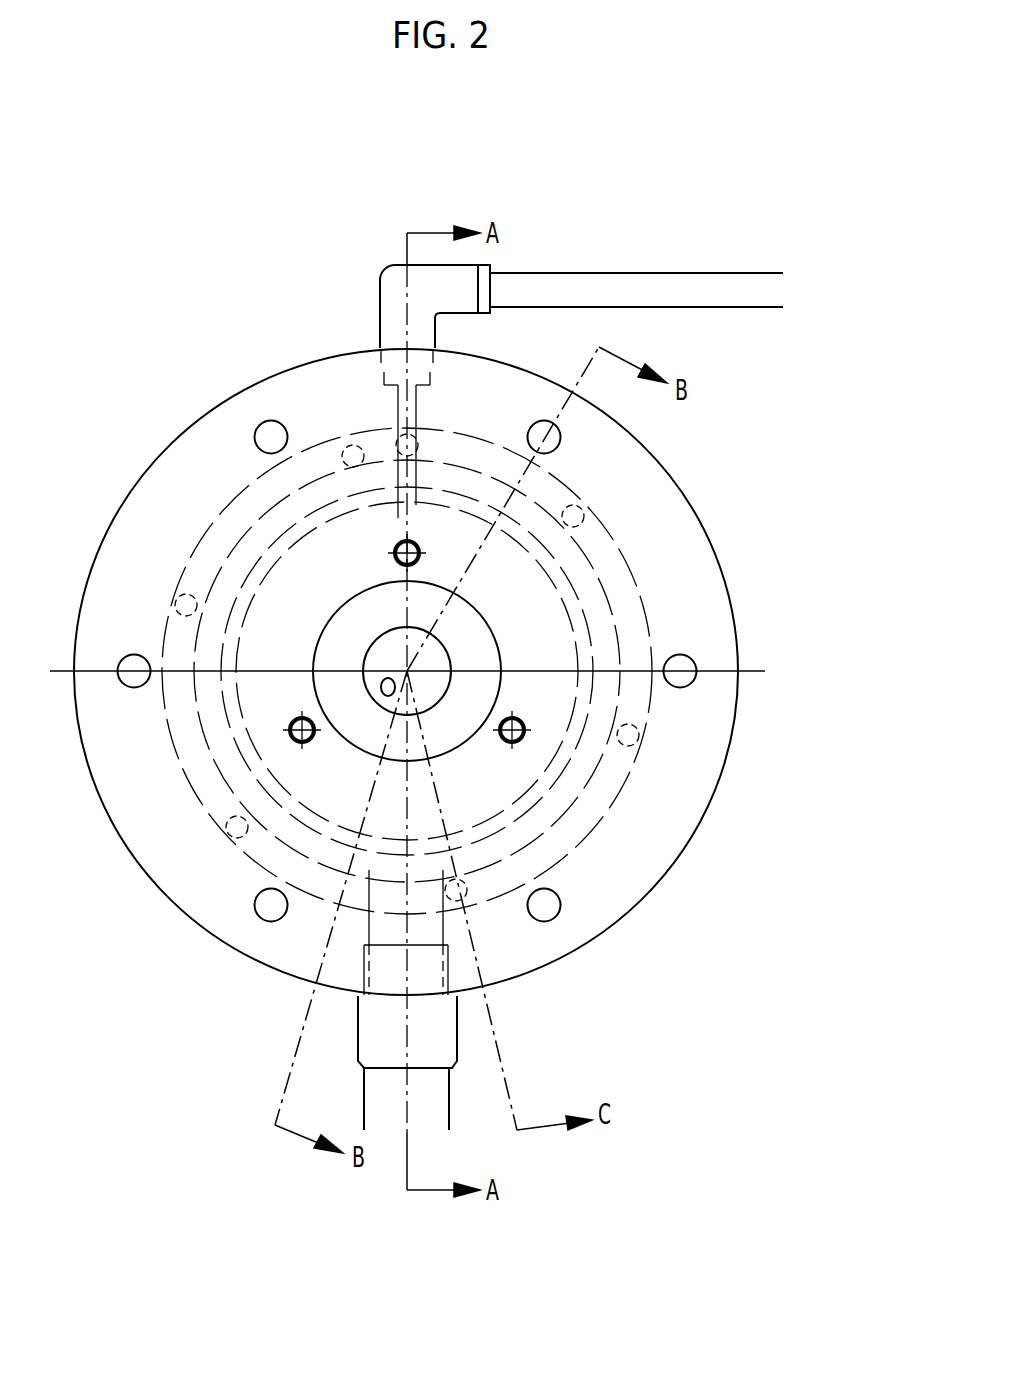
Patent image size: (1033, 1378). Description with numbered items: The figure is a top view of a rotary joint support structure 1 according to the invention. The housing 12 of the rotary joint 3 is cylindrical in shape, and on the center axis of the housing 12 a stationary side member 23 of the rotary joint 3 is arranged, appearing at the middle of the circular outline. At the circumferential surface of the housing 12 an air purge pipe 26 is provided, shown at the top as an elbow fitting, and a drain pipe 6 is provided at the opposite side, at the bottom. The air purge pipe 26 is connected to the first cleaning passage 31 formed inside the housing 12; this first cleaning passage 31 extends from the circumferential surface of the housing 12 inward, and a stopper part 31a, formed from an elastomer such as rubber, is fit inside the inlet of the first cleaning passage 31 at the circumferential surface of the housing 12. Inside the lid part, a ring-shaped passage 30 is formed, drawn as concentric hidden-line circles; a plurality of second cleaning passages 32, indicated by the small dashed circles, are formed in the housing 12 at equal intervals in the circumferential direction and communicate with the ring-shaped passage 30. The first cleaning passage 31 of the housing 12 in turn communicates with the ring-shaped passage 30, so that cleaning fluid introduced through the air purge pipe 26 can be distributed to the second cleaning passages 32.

The rotary table device 1 is at (745, 163).
The rotary joint 3 is at (510, 590).
The drain pipe 6 is at (433, 1095).
The housing 12 is at (175, 488).
The stationary side member 23 is at (440, 728).
The air purge pipe 26 is at (392, 293).
The ring-shaped passage 30 is at (648, 612).
The first cleaning passage 31 is at (397, 403).
The stopper part 31a is at (390, 368).
The second cleaning passage 32 is at (585, 516).